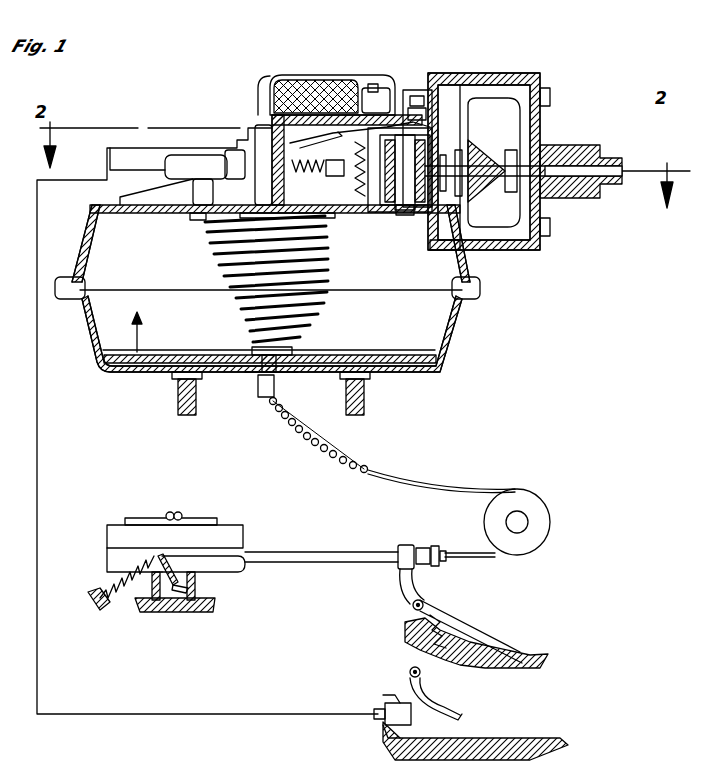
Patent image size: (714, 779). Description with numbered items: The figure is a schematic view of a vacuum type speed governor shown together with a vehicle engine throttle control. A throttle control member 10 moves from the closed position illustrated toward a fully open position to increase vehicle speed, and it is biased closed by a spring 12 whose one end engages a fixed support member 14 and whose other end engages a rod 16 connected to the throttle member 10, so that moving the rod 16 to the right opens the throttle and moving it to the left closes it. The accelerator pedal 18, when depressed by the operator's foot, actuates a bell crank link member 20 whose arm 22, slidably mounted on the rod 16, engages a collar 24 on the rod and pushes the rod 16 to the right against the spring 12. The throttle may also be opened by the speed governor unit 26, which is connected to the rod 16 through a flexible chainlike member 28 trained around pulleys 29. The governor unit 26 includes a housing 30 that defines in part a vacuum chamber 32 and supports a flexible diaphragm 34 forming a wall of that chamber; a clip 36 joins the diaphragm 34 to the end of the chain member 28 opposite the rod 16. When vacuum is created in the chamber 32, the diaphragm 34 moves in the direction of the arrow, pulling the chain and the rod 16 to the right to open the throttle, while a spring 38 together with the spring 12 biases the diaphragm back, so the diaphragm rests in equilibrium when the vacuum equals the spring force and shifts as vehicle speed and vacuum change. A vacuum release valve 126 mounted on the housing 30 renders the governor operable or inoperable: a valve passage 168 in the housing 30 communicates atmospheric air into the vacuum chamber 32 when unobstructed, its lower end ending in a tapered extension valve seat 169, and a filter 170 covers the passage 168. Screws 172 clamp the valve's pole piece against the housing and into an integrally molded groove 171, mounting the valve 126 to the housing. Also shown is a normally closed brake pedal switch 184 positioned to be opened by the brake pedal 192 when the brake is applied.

The throttle control member 10 is at (190, 587).
The spring 12 is at (120, 598).
The fixed support member 14 is at (97, 608).
The rod 16 is at (293, 563).
The accelerator pedal 18 is at (474, 630).
The bell crank link member 20 is at (434, 603).
The arm 22 is at (400, 584).
The collar 24 is at (425, 547).
The speed governor unit 26 is at (296, 292).
The flexible chainlike member 28 is at (318, 452).
The pulleys 29 is at (540, 500).
The housing 30 is at (472, 268).
The vacuum chamber 32 is at (435, 322).
The flexible diaphragm 34 is at (90, 333).
The clip 36 is at (258, 390).
The spring 38 is at (292, 352).
The vacuum release valve 126 is at (372, 220).
The valve passage 168 is at (318, 78).
The tapered extension valve seat 169 is at (300, 130).
The filter 170 is at (280, 78).
The groove 171 is at (360, 78).
The screws 172 is at (421, 214).
The brake pedal switch 184 is at (398, 703).
The brake pedal 192 is at (460, 712).